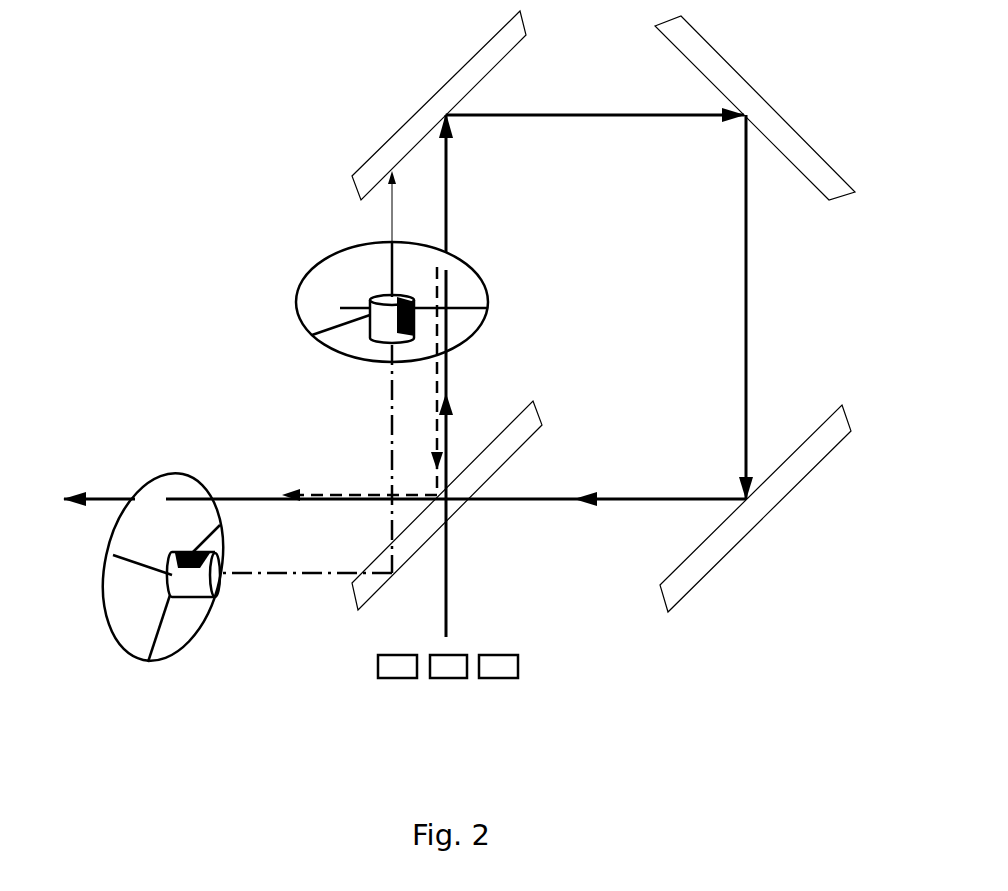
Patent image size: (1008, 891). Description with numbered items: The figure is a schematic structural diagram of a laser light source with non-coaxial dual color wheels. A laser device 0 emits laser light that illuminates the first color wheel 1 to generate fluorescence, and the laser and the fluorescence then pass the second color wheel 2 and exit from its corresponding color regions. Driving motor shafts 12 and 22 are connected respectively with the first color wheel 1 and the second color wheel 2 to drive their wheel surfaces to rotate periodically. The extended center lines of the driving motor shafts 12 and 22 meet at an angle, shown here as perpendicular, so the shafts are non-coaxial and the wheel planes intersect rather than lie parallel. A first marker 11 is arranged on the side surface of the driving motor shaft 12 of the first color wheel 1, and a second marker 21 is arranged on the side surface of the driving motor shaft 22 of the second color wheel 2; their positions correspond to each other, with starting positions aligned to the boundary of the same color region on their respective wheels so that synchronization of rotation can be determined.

The laser device 0 is at (468, 693).
The first color wheel 1 is at (297, 312).
The first marker 11 is at (342, 308).
The driving motor shaft 12 is at (373, 343).
The second color wheel 2 is at (183, 472).
The second marker 21 is at (198, 552).
The driving motor shaft 22 is at (203, 583).